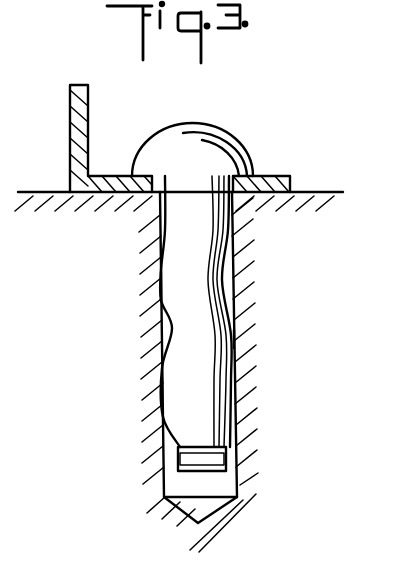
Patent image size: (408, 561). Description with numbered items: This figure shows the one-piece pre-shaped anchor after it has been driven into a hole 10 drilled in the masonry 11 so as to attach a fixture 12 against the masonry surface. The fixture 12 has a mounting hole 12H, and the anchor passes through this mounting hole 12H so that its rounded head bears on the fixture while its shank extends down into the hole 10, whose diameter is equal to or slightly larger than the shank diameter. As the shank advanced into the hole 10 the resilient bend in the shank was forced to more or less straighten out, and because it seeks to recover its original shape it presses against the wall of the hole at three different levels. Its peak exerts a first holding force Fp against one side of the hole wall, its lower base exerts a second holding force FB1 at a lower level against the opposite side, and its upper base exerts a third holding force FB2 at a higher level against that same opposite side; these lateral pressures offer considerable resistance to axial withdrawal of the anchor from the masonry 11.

The hole 10 is at (232, 283).
The masonry 11 is at (37, 189).
The fixture 12 is at (89, 107).
The mounting hole 12H is at (237, 163).
The second holding force FB1 is at (163, 389).
The third holding force FB2 is at (160, 289).
The first holding force Fp is at (237, 338).